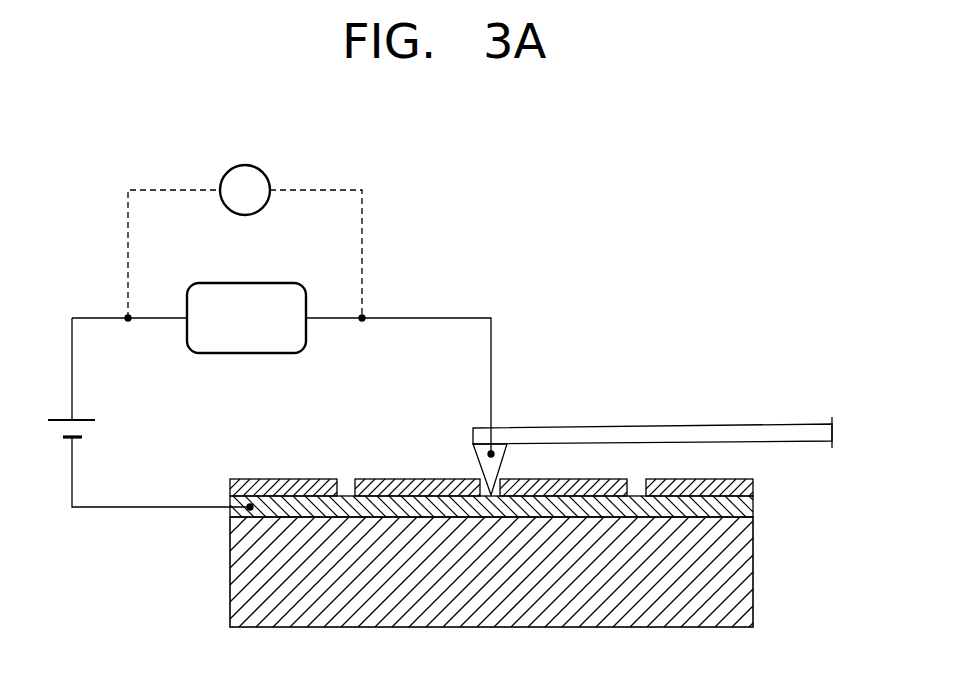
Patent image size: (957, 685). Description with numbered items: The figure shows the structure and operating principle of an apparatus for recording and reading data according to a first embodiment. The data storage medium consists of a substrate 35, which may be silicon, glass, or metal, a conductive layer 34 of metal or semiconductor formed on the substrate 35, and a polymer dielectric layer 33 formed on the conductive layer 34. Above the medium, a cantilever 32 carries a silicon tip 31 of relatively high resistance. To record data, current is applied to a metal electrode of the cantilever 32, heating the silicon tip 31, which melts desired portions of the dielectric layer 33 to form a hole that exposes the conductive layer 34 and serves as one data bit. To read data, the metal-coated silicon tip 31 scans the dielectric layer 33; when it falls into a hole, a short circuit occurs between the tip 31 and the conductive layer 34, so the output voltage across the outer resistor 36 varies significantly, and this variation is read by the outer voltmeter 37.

The silicon tip 31 is at (478, 455).
The cantilever 32 is at (580, 427).
The dielectric layer 33 is at (753, 489).
The conductive layer 34 is at (742, 510).
The substrate 35 is at (740, 577).
The outer resistor 36 is at (247, 355).
The outer voltmeter 37 is at (228, 172).